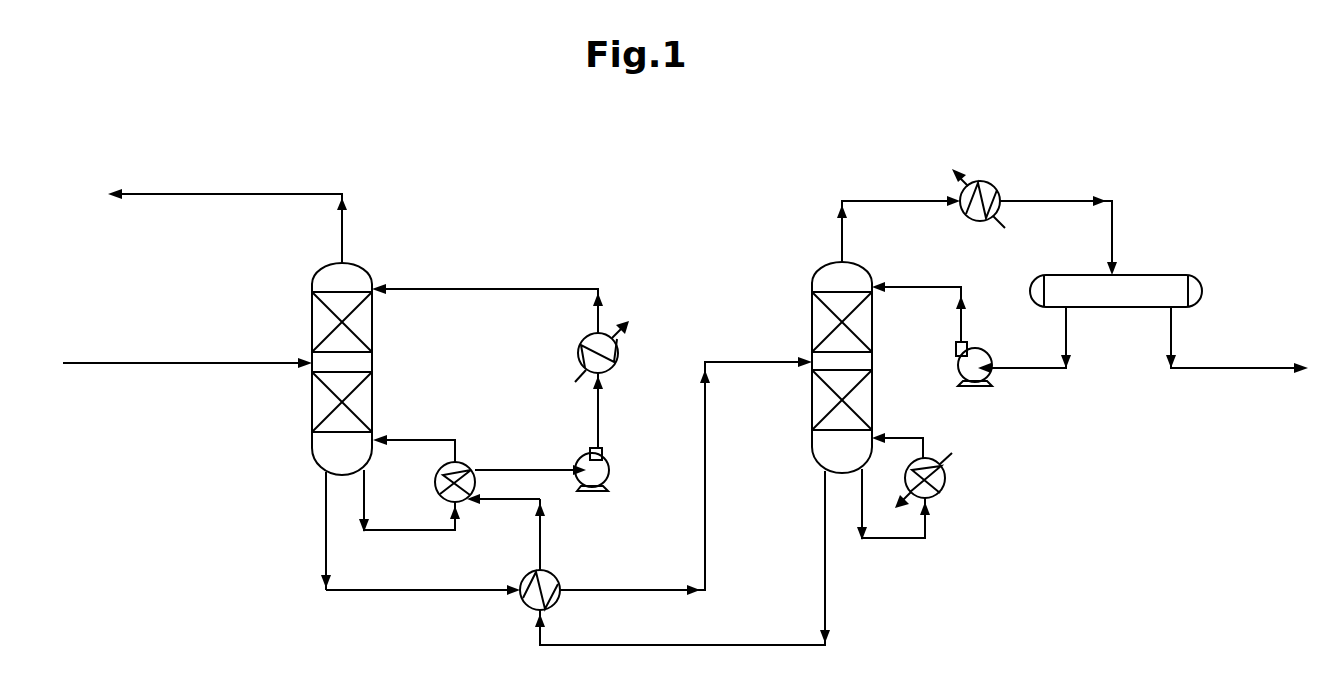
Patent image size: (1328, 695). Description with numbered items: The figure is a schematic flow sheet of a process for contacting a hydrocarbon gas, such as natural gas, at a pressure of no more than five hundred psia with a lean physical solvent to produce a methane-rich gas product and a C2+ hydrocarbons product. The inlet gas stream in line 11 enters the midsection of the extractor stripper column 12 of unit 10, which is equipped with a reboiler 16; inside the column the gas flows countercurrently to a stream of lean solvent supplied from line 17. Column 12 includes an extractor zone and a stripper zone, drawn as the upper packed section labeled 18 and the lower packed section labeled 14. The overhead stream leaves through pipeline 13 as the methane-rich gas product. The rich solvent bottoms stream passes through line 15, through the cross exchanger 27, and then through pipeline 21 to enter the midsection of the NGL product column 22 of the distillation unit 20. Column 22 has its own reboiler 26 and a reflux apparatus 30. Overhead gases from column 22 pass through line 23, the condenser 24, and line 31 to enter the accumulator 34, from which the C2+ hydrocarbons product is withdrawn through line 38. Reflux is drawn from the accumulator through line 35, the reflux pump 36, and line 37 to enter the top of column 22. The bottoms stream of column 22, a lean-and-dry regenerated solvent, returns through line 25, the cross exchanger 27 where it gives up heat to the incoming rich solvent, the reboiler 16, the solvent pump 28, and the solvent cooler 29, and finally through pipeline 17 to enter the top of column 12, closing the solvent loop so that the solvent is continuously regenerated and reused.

The unit 10 is at (292, 448).
The inlet gas line 11 is at (279, 362).
The extractor stripper column 12 is at (372, 366).
The overhead pipeline 13 is at (342, 208).
The stripper section 14 is at (322, 414).
The rich solvent line 15 is at (372, 583).
The reboiler 16 is at (438, 474).
The lean solvent line 17 is at (398, 286).
The extractor section 18 is at (312, 315).
The distillation unit 20 is at (792, 320).
The pipeline 21 is at (705, 558).
The NGL product column 22 is at (872, 366).
The overhead line 23 is at (897, 202).
The condenser 24 is at (1003, 195).
The bottoms line 25 is at (758, 645).
The reboiler 26 is at (948, 480).
The cross exchanger 27 is at (525, 578).
The solvent pump 28 is at (608, 463).
The solvent cooler 29 is at (619, 353).
The reflux apparatus 30 is at (1136, 220).
The condensed overhead line 31 is at (1028, 204).
The accumulator 34 is at (1063, 277).
The reflux line 35 is at (1022, 371).
The reflux pump 36 is at (965, 353).
The reflux return line 37 is at (957, 318).
The product line 38 is at (1210, 368).